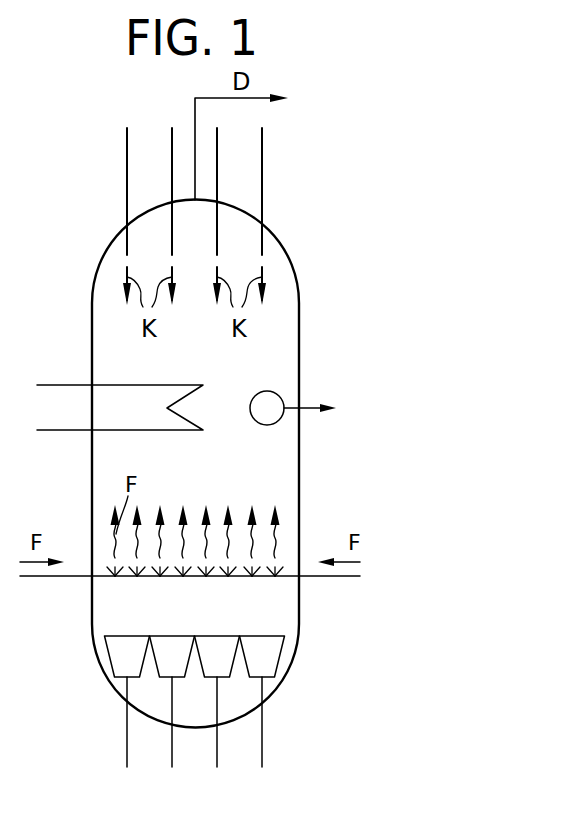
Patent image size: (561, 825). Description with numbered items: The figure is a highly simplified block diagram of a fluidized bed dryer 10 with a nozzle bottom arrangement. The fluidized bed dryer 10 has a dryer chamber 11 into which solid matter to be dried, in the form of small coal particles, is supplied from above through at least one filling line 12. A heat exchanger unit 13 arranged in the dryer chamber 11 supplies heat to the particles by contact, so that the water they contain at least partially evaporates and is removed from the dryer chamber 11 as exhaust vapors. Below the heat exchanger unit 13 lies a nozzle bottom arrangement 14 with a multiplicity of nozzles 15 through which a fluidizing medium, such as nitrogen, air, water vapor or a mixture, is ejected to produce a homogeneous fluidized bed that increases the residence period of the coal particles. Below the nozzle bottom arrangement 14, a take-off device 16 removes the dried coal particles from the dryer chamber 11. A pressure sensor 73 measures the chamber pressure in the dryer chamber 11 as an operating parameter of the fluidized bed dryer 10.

The fluidized bed dryer 10 is at (428, 274).
The dryer chamber 11 is at (299, 463).
The filling line 12 is at (127, 168).
The heat exchanger unit 13 is at (203, 406).
The nozzle bottom arrangement 14 is at (210, 487).
The nozzles 15 is at (160, 578).
The take-off device 16 is at (305, 697).
The pressure sensor 73 is at (280, 393).